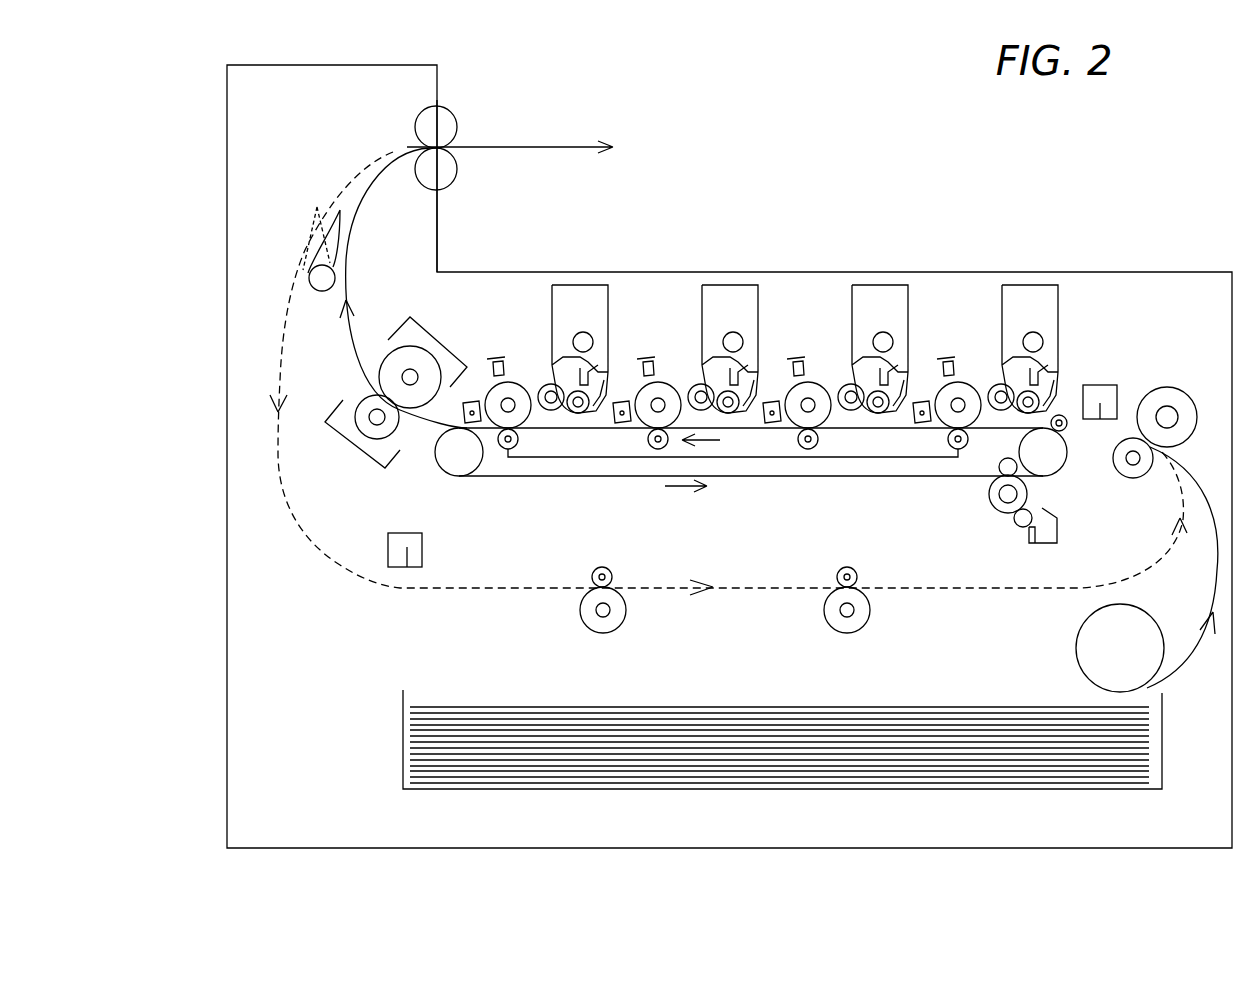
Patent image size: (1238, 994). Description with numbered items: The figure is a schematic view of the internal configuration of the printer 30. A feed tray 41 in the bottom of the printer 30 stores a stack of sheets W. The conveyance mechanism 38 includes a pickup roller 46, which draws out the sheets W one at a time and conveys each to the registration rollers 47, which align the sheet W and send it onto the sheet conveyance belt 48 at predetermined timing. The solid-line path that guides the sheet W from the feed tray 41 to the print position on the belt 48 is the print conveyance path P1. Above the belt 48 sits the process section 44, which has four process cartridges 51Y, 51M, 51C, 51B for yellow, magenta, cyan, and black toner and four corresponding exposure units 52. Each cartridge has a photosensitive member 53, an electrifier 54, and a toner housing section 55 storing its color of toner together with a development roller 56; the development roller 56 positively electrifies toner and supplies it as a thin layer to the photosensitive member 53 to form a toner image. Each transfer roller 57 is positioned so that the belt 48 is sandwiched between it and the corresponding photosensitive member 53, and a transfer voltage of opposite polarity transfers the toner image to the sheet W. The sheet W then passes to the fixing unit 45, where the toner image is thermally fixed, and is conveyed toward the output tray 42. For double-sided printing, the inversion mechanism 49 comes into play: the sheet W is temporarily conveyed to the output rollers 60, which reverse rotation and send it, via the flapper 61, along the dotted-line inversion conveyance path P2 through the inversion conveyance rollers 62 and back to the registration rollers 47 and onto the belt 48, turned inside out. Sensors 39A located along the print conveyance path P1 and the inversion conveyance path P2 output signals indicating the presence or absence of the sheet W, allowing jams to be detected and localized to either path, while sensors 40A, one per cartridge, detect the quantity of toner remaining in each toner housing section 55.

The printer 30 is at (733, 134).
The conveyance mechanism 38 is at (285, 614).
The sensor 39A is at (407, 567).
The sensor 40A is at (1075, 333).
The feed tray 41 is at (403, 737).
The output tray 42 is at (472, 270).
The process section 44 is at (819, 283).
The fixing unit 45 is at (352, 450).
The pickup roller 46 is at (1102, 660).
The registration rollers 47 is at (1133, 442).
The sheet conveyance belt 48 is at (767, 478).
The inversion mechanism 49 is at (279, 509).
The process cartridge 51B is at (567, 285).
The process cartridge 51C is at (735, 287).
The process cartridge 51M is at (873, 287).
The process cartridge 51Y is at (1005, 382).
The exposure unit 52 is at (949, 310).
The photosensitive member 53 is at (962, 366).
The electrifier 54 is at (906, 464).
The toner housing section 55 is at (1044, 329).
The development roller 56 is at (998, 454).
The transfer roller 57 is at (941, 495).
The output rollers 60 is at (452, 172).
The flapper 61 is at (313, 243).
The inversion conveyance rollers 62 is at (605, 567).
The sheet W is at (483, 718).
The print conveyance path P1 is at (1198, 487).
The inversion conveyance path P2 is at (280, 452).